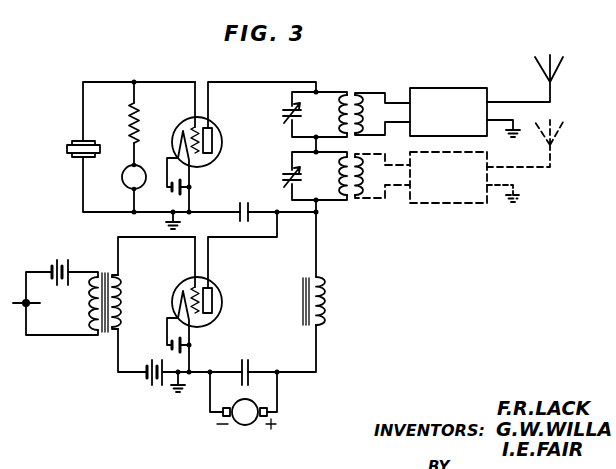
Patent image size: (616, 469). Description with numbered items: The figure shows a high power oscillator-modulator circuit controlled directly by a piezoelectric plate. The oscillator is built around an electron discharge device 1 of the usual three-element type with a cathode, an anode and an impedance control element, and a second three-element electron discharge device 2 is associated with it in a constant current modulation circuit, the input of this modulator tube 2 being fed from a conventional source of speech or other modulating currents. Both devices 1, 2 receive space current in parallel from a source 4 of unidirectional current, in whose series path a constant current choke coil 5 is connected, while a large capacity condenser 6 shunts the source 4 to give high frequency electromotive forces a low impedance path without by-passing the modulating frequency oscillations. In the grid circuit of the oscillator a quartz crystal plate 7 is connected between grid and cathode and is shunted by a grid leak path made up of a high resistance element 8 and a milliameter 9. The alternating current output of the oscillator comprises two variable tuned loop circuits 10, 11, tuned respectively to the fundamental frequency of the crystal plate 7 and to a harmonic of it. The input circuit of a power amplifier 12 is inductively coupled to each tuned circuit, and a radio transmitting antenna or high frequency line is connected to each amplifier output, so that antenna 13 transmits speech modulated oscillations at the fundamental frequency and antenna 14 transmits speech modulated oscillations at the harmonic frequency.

The electron discharge device 1 is at (209, 126).
The second electron discharge device 2 is at (216, 301).
The source of unidirectional current 4 is at (250, 422).
The constant current choke coil 5 is at (331, 299).
The large capacity condenser 6 is at (248, 360).
The quartz crystal plate 7 is at (78, 157).
The high resistance element 8 is at (140, 121).
The milliameter 9 is at (138, 167).
The variable tuned loop circuit 10 is at (327, 194).
The variable tuned loop circuit 11 is at (331, 97).
The power amplifier 12 is at (443, 90).
The antenna 13 is at (554, 158).
The antenna 14 is at (554, 84).